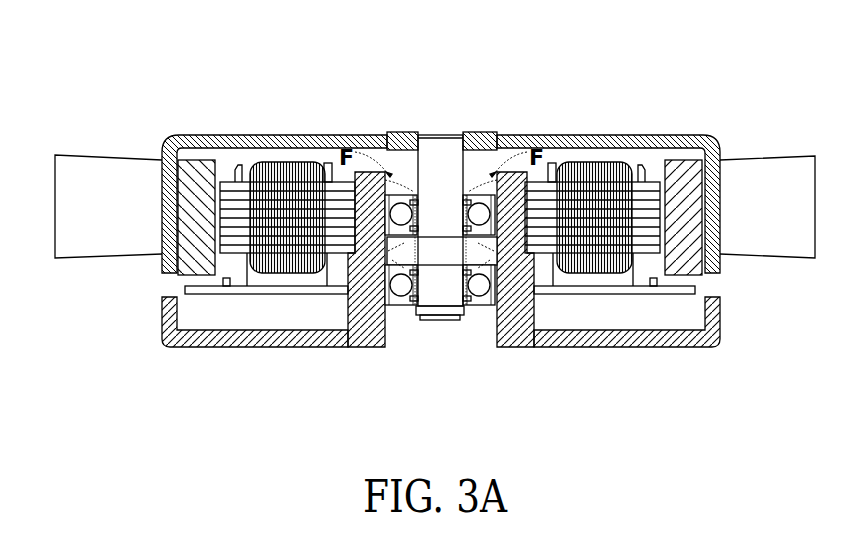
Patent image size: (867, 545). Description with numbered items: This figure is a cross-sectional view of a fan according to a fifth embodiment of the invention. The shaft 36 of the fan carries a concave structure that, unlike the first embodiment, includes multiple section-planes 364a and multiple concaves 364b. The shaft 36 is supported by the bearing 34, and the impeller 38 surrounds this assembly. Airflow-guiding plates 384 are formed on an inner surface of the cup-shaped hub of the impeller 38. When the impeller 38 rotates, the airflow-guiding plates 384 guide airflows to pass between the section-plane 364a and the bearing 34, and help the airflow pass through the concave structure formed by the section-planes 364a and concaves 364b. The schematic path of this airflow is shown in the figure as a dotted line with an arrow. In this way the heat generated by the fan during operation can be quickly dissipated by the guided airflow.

The bearing 34 is at (477, 197).
The shaft 36 is at (445, 150).
The impeller 38 is at (610, 135).
The airflow-guiding plates 384 is at (402, 132).
The section-planes 364a is at (430, 198).
The concaves 364b is at (460, 303).